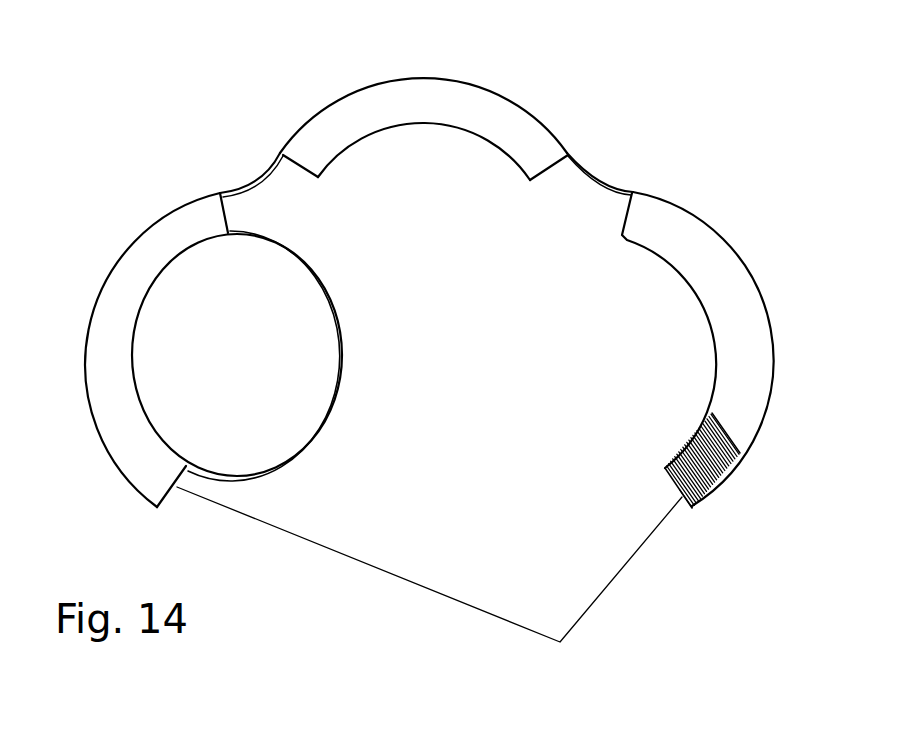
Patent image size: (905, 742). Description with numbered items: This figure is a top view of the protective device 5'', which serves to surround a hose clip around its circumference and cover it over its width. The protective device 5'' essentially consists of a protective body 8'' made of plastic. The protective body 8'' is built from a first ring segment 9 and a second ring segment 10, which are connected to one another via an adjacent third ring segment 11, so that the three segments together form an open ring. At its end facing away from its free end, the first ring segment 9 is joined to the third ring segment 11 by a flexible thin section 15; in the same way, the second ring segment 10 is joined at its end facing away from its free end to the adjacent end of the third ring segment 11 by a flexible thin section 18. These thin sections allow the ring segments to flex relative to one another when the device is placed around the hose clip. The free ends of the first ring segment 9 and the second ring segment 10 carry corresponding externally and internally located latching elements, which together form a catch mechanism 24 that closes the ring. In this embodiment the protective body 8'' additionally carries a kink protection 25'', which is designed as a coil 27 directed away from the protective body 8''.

The third ring segment 11 is at (355, 113).
The flexible thin section 18 is at (258, 175).
The flexible thin section 15 is at (602, 180).
The second ring segment 10 is at (115, 290).
The coil 27 is at (328, 288).
The first ring segment 9 is at (722, 280).
The catch mechanism 24 is at (560, 642).
The protective device 5'' is at (557, 511).
The protective body 8'' is at (673, 90).
The kink protection 25'' is at (387, 458).